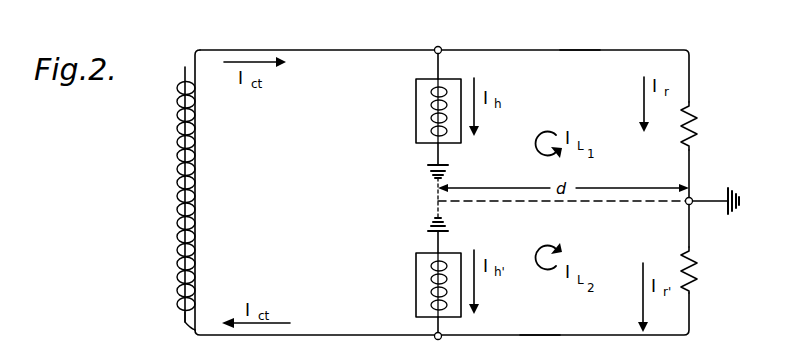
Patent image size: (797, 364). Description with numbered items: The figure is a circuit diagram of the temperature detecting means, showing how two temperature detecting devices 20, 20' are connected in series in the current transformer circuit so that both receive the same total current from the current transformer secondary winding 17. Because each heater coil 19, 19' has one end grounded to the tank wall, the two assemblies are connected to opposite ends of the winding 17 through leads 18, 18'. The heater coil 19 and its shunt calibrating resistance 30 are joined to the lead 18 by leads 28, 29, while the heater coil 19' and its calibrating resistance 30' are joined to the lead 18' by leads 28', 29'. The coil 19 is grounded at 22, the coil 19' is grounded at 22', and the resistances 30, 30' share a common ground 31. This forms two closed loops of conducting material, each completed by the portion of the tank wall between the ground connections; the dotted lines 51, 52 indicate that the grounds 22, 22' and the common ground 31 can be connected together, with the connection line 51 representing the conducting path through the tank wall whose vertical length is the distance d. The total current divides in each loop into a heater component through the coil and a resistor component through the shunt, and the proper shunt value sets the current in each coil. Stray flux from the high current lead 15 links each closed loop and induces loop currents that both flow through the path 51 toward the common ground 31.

The high current lead 15 is at (185, 316).
The current transformer secondary winding 17 is at (196, 246).
The lead 18 is at (316, 190).
The lead 18' is at (316, 312).
The heater coil 19 is at (419, 111).
The heater coil 19' is at (419, 285).
The temperature detecting device 20 is at (563, 61).
The temperature detecting device 20' is at (563, 328).
The ground 22 is at (412, 160).
The ground 22' is at (411, 233).
The lead 28 is at (401, 68).
The lead 28' is at (393, 325).
The lead 29 is at (578, 75).
The lead 29' is at (548, 322).
The calibrating resistance 30 is at (712, 126).
The calibrating resistance 30' is at (714, 270).
The common ground 31 is at (744, 205).
The connection line 51 is at (578, 204).
The dotted line 52 is at (438, 201).